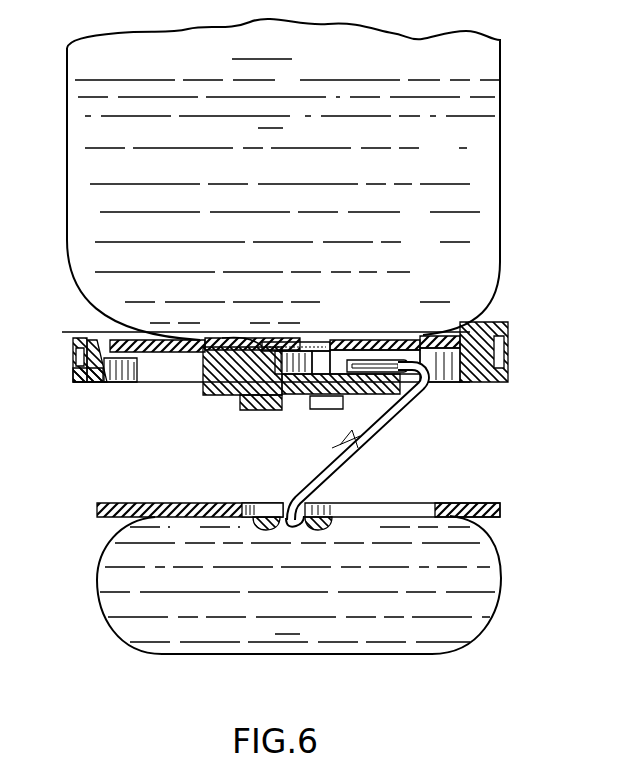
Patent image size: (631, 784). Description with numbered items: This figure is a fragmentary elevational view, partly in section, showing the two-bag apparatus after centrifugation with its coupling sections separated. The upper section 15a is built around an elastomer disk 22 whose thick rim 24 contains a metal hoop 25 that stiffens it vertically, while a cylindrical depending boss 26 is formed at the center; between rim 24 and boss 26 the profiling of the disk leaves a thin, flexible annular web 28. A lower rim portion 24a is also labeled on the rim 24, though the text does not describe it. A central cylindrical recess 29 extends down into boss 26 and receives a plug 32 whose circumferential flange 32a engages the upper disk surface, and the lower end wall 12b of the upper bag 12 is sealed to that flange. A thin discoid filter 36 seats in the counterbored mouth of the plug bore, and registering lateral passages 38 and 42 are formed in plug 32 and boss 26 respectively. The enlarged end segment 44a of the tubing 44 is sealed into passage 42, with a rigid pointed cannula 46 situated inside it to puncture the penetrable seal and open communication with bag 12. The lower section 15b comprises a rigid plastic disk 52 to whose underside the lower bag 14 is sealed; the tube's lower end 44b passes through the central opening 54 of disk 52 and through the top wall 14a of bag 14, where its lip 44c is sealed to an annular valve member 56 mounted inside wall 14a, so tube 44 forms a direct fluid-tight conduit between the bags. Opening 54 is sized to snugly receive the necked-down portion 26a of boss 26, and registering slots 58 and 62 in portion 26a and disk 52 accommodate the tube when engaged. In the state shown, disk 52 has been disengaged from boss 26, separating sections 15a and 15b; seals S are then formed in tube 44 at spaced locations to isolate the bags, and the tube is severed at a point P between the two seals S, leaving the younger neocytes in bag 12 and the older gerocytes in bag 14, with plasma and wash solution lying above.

The bag 12 is at (500, 205).
The lower end wall of bag 12b is at (352, 344).
The bag 14 is at (501, 586).
The top wall of bag 14a is at (386, 564).
The upper section of coupling 15a is at (594, 380).
The lower section of coupling 15b is at (578, 482).
The disk 22 is at (80, 334).
The rim 24 is at (78, 356).
The cap flange 24a is at (80, 386).
The metal hoop 25 is at (510, 338).
The boss 26 is at (208, 386).
The necked-down portion of boss 26a is at (246, 410).
The annular web 28 is at (132, 384).
The cylindrical recess 29 is at (264, 338).
The plug 32 is at (274, 340).
The circumferential flange of plug 32a is at (402, 344).
The filter 36 is at (296, 340).
The lateral passage 38 is at (316, 352).
The lateral passage 42 is at (330, 342).
The tubing 44 is at (386, 424).
The enlarged end segment of tubing 44a is at (384, 384).
The lower end of tubing 44b is at (288, 502).
The lower edge or lip of tube 44c is at (330, 564).
The cannula 46 is at (394, 358).
The disk 52 is at (96, 510).
The central opening 54 is at (260, 504).
The annular valve member 56 is at (266, 530).
The slot 58 is at (326, 410).
The slot 62 is at (409, 504).
The seals S is at (346, 448).
The point P is at (356, 450).